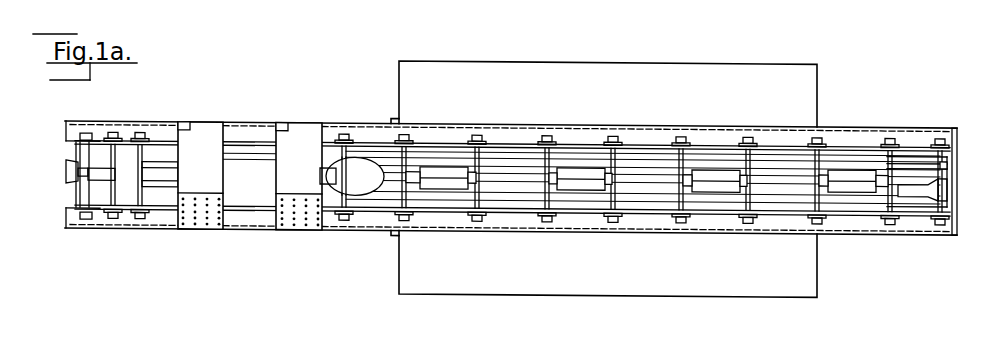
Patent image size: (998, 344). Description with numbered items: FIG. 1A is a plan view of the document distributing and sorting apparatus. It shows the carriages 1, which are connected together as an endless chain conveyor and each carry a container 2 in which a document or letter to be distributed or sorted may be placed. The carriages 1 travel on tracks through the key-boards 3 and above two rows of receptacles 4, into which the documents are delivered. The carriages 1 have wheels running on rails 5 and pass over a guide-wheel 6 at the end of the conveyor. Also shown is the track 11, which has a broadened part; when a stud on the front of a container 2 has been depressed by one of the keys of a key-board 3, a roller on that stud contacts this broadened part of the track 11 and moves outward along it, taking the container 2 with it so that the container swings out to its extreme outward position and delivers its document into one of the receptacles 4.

The carriage 1 is at (402, 230).
The container 2 is at (440, 178).
The key-board 3 is at (197, 147).
The receptacle 4 is at (618, 75).
The rail 5 is at (831, 136).
The guide-wheel 6 is at (944, 159).
The track 11 is at (363, 172).